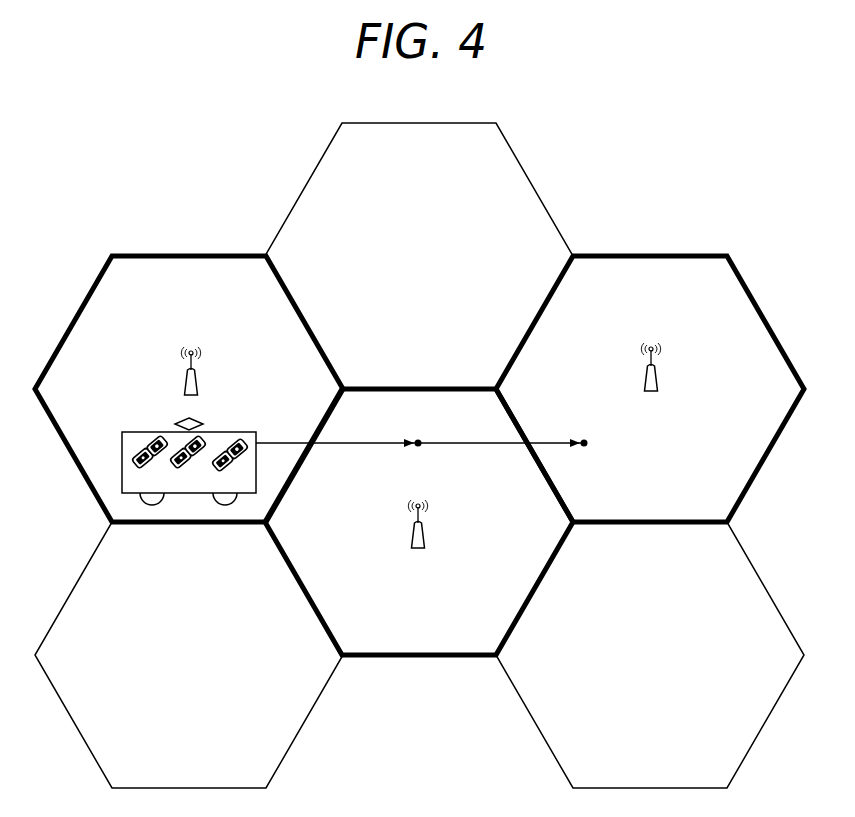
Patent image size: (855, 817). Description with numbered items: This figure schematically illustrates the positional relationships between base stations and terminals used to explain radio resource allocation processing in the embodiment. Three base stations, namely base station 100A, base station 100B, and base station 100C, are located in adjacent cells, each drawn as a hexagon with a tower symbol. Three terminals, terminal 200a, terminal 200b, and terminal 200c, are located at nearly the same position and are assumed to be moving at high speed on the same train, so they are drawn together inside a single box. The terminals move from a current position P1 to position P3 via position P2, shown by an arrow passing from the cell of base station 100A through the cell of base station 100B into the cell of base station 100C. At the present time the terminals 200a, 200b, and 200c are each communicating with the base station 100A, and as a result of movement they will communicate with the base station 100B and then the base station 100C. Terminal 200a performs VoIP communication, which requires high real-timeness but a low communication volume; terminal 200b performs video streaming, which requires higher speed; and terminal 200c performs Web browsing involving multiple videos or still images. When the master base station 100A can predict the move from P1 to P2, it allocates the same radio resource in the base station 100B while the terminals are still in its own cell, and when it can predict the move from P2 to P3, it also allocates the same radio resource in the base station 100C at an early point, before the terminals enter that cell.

The base station 100A is at (183, 382).
The base station 100B is at (425, 535).
The base station 100C is at (660, 373).
The terminal 200a is at (138, 466).
The terminal 200b is at (181, 466).
The terminal 200c is at (232, 468).
The current position P1 is at (420, 430).
The position P2 is at (417, 429).
The position P3 is at (583, 429).